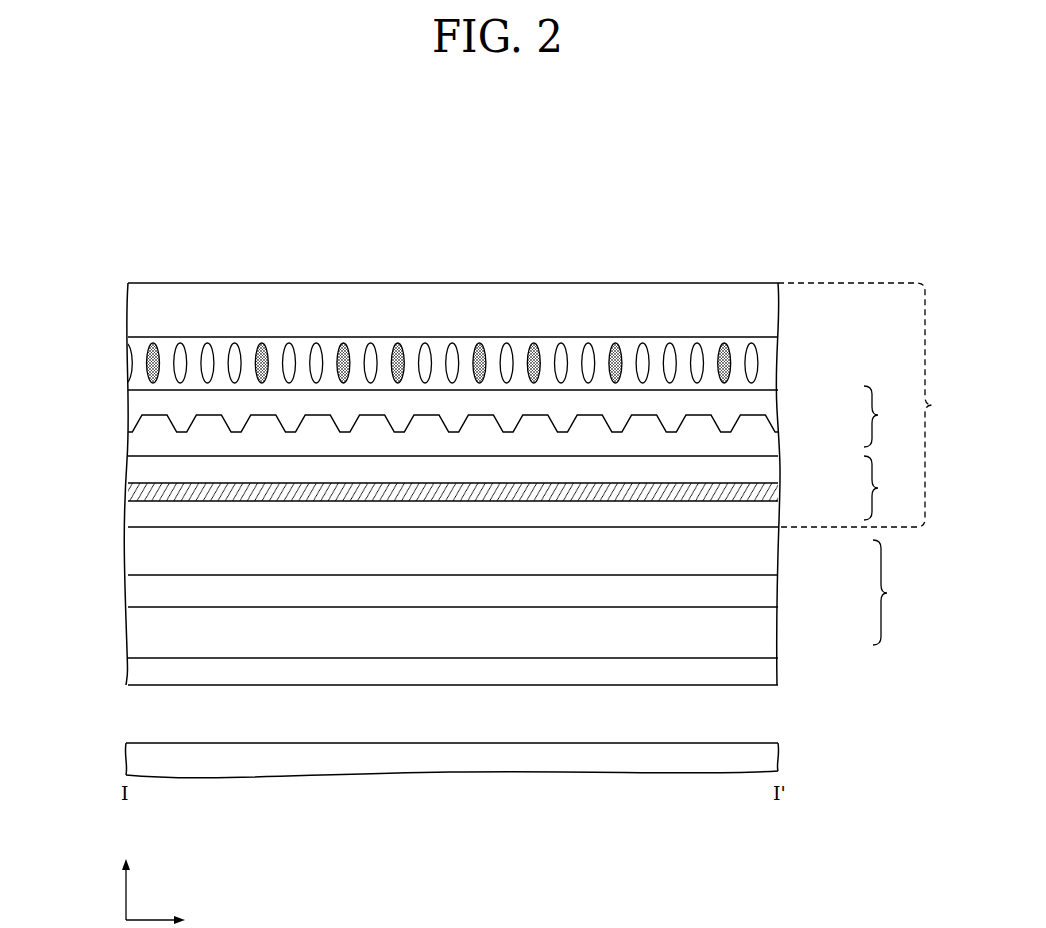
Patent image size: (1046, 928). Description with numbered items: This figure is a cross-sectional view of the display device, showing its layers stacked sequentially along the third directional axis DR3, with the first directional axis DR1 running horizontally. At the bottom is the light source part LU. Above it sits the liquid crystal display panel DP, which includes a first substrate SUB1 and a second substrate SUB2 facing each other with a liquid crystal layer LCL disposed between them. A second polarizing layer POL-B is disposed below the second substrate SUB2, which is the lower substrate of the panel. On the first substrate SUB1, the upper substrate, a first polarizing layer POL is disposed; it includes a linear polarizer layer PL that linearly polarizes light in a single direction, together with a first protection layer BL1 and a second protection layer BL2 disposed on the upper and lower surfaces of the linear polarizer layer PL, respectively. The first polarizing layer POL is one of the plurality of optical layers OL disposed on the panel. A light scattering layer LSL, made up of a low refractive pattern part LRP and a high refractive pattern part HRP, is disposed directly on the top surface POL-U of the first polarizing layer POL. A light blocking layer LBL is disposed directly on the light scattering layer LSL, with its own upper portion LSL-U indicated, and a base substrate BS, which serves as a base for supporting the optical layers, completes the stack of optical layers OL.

The base substrate BS is at (767, 307).
The light blocking layer LBL is at (767, 363).
The high refractive pattern part HRP is at (767, 400).
The low refractive pattern part LRP is at (767, 440).
The light scattering layer LSL is at (889, 416).
The first protection layer BL1 is at (767, 468).
The linear polarizer layer PL is at (767, 492).
The second protection layer BL2 is at (767, 514).
The first polarizing layer POL is at (890, 488).
The optical layers OL is at (870, 405).
The first substrate SUB1 is at (767, 555).
The liquid crystal layer LCL is at (767, 595).
The second substrate SUB2 is at (767, 635).
The liquid crystal display panel DP is at (894, 592).
The second polarizing layer POL-B is at (767, 675).
The light source part LU is at (767, 764).
The light shielding unit LSL-U is at (166, 388).
The top surface of the first polarizing layer POL-U is at (166, 454).
The first direction DR1 is at (177, 918).
The third directional axis DR3 is at (128, 878).